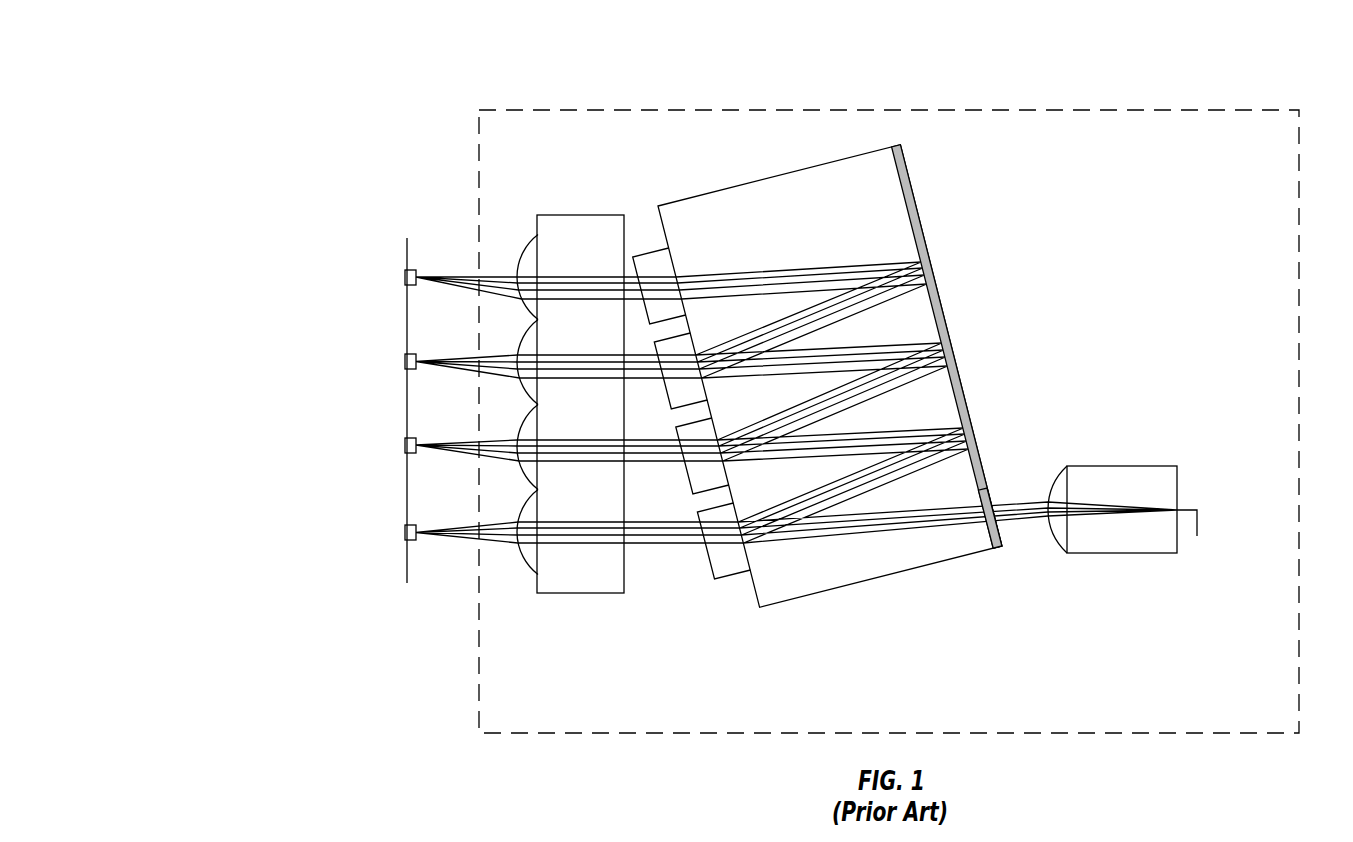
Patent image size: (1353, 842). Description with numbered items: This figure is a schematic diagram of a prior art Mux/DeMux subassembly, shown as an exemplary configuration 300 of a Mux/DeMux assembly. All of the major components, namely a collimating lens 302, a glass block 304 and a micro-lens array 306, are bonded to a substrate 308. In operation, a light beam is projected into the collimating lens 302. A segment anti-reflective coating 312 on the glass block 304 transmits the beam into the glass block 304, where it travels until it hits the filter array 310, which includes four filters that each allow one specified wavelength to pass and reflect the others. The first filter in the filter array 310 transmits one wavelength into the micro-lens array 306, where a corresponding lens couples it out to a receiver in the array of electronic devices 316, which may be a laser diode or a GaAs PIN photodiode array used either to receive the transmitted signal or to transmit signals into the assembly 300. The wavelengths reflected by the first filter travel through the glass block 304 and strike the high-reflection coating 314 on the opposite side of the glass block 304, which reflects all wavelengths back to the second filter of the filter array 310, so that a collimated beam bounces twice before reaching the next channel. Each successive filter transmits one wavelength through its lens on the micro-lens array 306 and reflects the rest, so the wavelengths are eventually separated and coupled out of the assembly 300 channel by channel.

The configuration of a Mux/DeMux assembly 300 is at (1253, 70).
The collimating lens 302 is at (1123, 455).
The glass block 304 is at (856, 594).
The micro-lens array 306 is at (580, 600).
The substrate 308 is at (1277, 714).
The filter array 310 is at (646, 237).
The segment anti-reflective coating 312 is at (1010, 556).
The high-reflection coating 314 is at (951, 287).
The array of electronic devices 316 is at (401, 300).